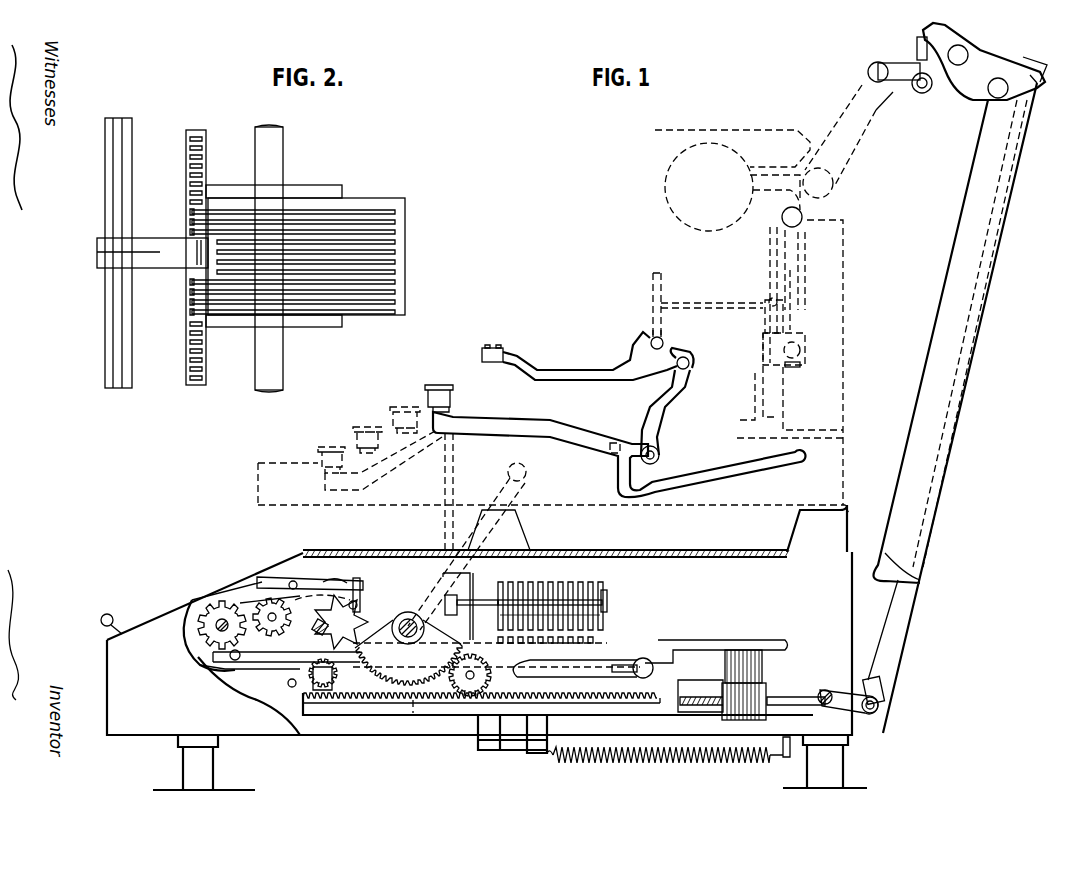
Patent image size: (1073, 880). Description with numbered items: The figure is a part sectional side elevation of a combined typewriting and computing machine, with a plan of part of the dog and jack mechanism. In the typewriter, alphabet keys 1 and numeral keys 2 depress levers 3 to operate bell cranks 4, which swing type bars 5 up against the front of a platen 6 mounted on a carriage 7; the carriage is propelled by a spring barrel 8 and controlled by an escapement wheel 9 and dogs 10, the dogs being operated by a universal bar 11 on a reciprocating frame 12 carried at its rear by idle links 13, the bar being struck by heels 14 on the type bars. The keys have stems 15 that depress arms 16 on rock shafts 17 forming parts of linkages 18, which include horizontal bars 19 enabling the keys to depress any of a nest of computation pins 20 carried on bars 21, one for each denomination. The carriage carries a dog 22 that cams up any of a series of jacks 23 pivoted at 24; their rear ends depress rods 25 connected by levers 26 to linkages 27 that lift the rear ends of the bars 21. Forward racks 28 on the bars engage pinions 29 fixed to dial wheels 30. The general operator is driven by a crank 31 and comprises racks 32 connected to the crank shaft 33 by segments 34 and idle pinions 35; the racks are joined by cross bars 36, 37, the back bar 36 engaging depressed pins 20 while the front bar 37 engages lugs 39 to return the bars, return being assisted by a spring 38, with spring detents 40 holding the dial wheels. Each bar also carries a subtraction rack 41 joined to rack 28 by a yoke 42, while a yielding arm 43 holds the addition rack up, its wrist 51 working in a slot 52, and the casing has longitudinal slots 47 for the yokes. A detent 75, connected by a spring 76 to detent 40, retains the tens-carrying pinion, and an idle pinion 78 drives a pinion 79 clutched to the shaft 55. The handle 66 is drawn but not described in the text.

In FIG. 1, the alphabet keys 1 is at (335, 447).
In FIG. 1, the numeral keys 2 is at (427, 386).
In FIG. 1, the levers 3 is at (619, 454).
In FIG. 1, the bell cranks 4 is at (667, 406).
In FIG. 1, the type bars 5 is at (579, 356).
In FIG. 1, the platen 6 is at (709, 187).
In FIG. 2, the carriage 7 is at (105, 360).
In FIG. 1, the carriage 7 is at (744, 170).
In FIG. 1, the spring barrel 8 is at (805, 272).
In FIG. 1, the escapement wheel 9 is at (768, 255).
In FIG. 1, the dogs 10 is at (771, 302).
In FIG. 1, the universal bar 11 is at (653, 296).
In FIG. 1, the reciprocating frame 12 is at (690, 305).
In FIG. 1, the idle links 13 is at (800, 322).
In FIG. 1, the heels 14 is at (647, 337).
In FIG. 1, the stems 15 is at (456, 466).
In FIG. 1, the arms 16 is at (455, 616).
In FIG. 1, the rock shafts 17 is at (484, 606).
In FIG. 1, the linkages 18 is at (540, 583).
In FIG. 1, the horizontal bars 19 is at (580, 628).
In FIG. 1, the computation pins 20 is at (595, 640).
In FIG. 1, the bars 21 is at (700, 636).
In FIG. 2, the dog 22 is at (197, 248).
In FIG. 1, the dog 22 is at (910, 62).
In FIG. 2, the jacks 23 is at (243, 298).
In FIG. 1, the jacks 23 is at (928, 37).
In FIG. 2, the pivot 24 is at (277, 300).
In FIG. 1, the pivot 24 is at (966, 50).
In FIG. 1, the rods 25 is at (968, 293).
In FIG. 1, the levers 26 is at (836, 687).
In FIG. 1, the linkages 27 is at (766, 690).
In FIG. 1, the racks 28 is at (272, 637).
In FIG. 1, the pinions 29 is at (213, 656).
In FIG. 1, the dial wheels 30 is at (253, 602).
In FIG. 1, the crank 31 is at (490, 536).
In FIG. 1, the racks 32 is at (481, 707).
In FIG. 1, the shaft 33 is at (424, 611).
In FIG. 1, the segments 34 is at (408, 652).
In FIG. 1, the idle pinions 35 is at (465, 700).
In FIG. 1, the back cross bar 36 is at (651, 673).
In FIG. 1, the front cross bar 37 is at (490, 676).
In FIG. 1, the spring 38 is at (626, 762).
In FIG. 1, the lugs 39 is at (492, 668).
In FIG. 1, the spring detents 40 is at (272, 578).
In FIG. 1, the rack 41 is at (355, 590).
In FIG. 1, the yoke 42 is at (197, 626).
In FIG. 1, the yielding arm 43 is at (215, 669).
In FIG. 1, the longitudinal slots 47 is at (192, 602).
In FIG. 1, the wrist 51 is at (237, 661).
In FIG. 1, the horizontal slot 52 is at (284, 683).
In FIG. 1, the shaft 55 is at (335, 629).
In FIG. 1, the handle 66 is at (120, 618).
In FIG. 1, the detent 75 is at (324, 582).
In FIG. 1, the spring 76 is at (364, 600).
In FIG. 1, the idle pinion 78 is at (323, 678).
In FIG. 1, the pinion 79 is at (358, 606).